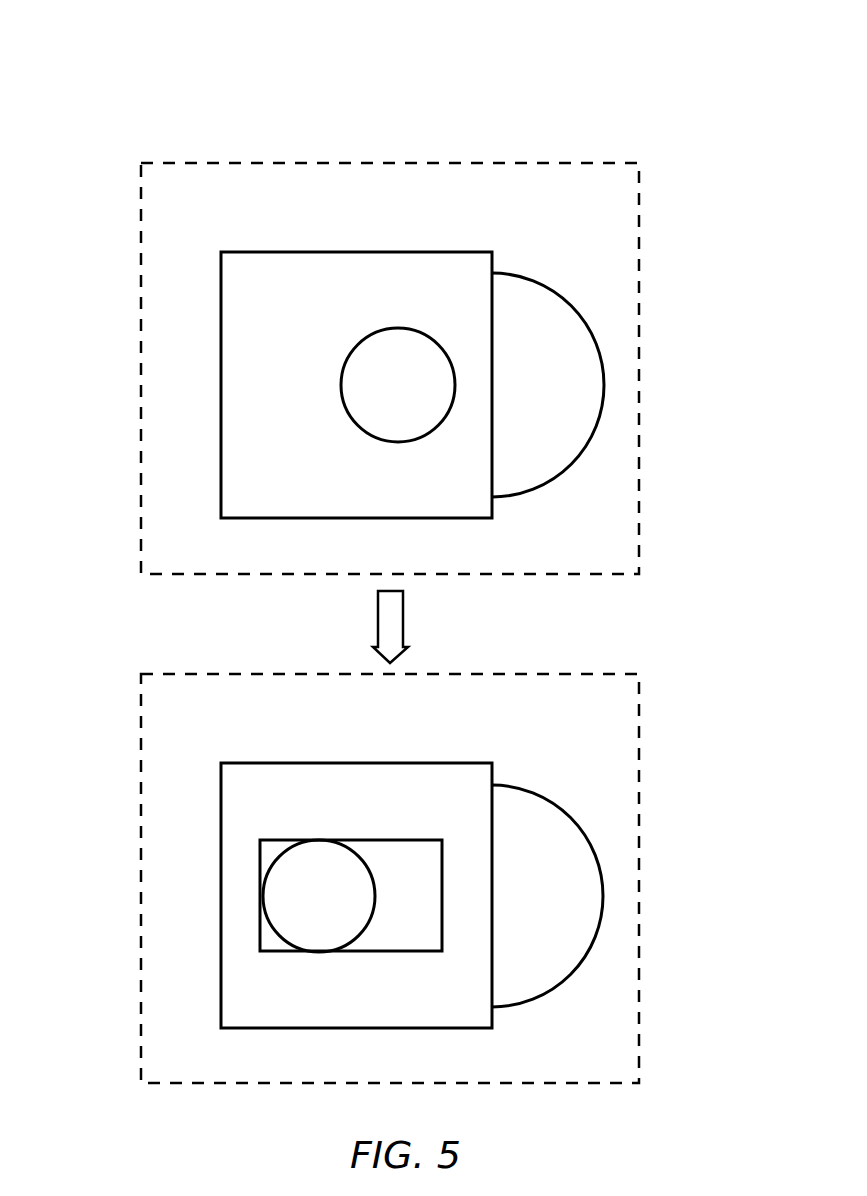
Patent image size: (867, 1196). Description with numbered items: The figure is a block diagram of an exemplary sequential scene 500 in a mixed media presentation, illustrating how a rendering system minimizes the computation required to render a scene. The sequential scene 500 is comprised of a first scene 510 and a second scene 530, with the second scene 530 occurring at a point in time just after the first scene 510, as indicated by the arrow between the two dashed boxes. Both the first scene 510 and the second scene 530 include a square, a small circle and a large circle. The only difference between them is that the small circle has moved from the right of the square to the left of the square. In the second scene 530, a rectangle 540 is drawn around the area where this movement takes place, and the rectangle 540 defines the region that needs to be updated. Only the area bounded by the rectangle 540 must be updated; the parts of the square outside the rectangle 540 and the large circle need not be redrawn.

The sequential scene 500 is at (699, 84).
The first scene 510 is at (140, 376).
The second scene 530 is at (140, 868).
The rectangle 540 is at (402, 951).